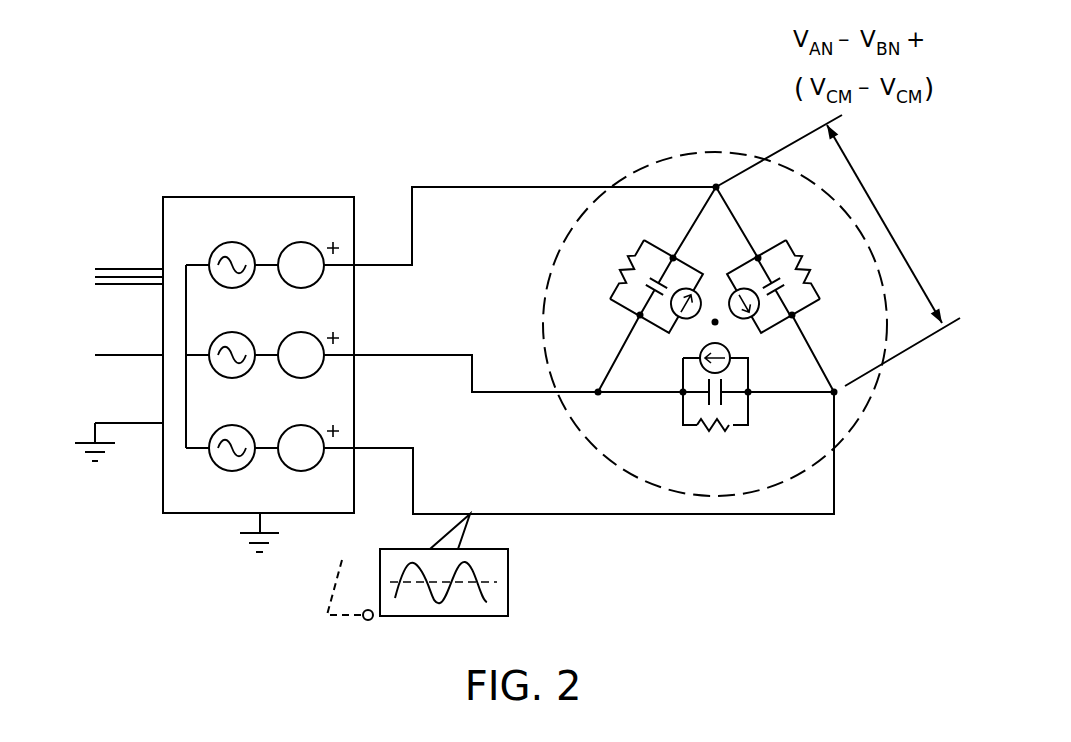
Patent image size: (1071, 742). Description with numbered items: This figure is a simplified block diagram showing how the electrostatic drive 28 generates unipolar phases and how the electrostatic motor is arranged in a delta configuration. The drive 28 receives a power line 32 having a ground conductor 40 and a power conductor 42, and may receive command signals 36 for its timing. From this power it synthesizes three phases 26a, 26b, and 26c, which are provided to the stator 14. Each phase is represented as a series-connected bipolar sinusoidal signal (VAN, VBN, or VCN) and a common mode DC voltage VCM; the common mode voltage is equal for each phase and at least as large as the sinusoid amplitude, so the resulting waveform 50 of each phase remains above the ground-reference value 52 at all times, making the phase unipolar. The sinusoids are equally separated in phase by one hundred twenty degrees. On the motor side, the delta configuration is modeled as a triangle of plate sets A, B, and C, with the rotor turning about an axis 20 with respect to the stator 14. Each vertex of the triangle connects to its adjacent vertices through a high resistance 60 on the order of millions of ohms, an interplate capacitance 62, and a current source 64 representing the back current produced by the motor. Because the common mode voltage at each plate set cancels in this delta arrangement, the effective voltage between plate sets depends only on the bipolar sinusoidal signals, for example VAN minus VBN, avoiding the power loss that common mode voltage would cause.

The stator 14 is at (706, 305).
The axis 20 is at (717, 324).
The first phase 26a is at (463, 188).
The second phase 26b is at (427, 354).
The third phase 26c is at (432, 513).
The electrostatic drive 28 is at (292, 195).
The power line 32 is at (148, 354).
The command signals 36 is at (128, 268).
The ground conductor 40 is at (108, 422).
The power conductor 42 is at (110, 354).
The waveform 50 is at (477, 571).
The ground-reference value 52 is at (350, 574).
The high resistance 60 is at (627, 275).
The interplate capacitance 62 is at (662, 272).
The current source 64 is at (698, 298).